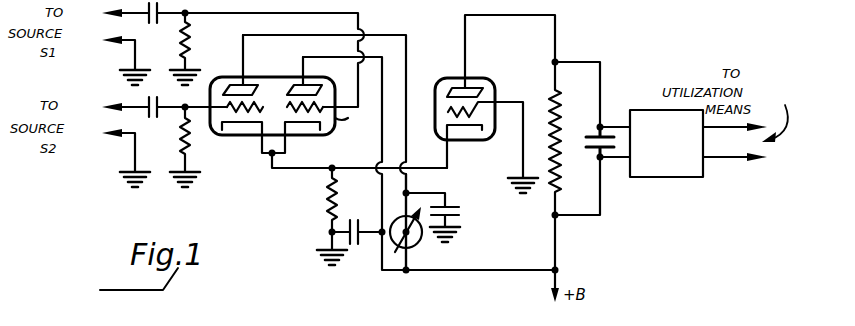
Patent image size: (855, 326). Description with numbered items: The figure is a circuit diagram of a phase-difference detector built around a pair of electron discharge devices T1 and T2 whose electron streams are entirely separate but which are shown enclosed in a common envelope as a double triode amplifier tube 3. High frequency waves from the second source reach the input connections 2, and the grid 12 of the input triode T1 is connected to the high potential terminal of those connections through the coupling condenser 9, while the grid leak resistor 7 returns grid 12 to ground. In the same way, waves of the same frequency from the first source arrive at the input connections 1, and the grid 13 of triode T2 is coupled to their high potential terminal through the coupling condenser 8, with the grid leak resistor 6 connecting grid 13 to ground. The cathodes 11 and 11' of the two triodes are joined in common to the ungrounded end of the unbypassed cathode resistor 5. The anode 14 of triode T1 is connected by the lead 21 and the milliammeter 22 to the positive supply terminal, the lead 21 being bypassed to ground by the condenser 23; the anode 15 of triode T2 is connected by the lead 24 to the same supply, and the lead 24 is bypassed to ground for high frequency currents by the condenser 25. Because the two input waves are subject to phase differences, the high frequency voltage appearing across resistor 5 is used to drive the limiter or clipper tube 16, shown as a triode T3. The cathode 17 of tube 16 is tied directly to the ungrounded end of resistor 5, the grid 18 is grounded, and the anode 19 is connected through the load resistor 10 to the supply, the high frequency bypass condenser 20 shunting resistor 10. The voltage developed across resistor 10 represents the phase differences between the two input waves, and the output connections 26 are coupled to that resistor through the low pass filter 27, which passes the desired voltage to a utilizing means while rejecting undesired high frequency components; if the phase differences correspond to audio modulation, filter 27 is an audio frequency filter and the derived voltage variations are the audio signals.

The input connections 1 is at (132, 44).
The input connections 2 is at (130, 140).
The double triode type of amplifier tube 3 is at (224, 176).
The cathode resistor 5 is at (324, 208).
The grid leak resistor 6 is at (189, 52).
The grid leak resistor 7 is at (190, 143).
The coupling condenser 8 is at (158, 32).
The coupling condenser 9 is at (154, 118).
The load resistor 10 is at (578, 194).
The cathode 11 is at (247, 146).
The cathode 11' is at (297, 146).
The grid 12 is at (262, 104).
The grid 13 is at (320, 106).
The anode 14 is at (250, 82).
The anode 15 is at (310, 82).
The limiter tube 16 is at (408, 142).
The cathode 17 is at (456, 136).
The grid 18 is at (482, 114).
The anode 19 is at (458, 84).
The high frequency bypass condenser 20 is at (580, 132).
The lead 21 is at (382, 36).
The milliammeter 22 is at (420, 243).
The condenser 23 is at (460, 211).
The lead 24 is at (380, 140).
The condenser 25 is at (362, 236).
The output connections 26 is at (720, 158).
The low pass filter 27 is at (680, 178).
The input triode T1 is at (216, 86).
The triode T2 is at (349, 123).
The triode T3 is at (494, 100).